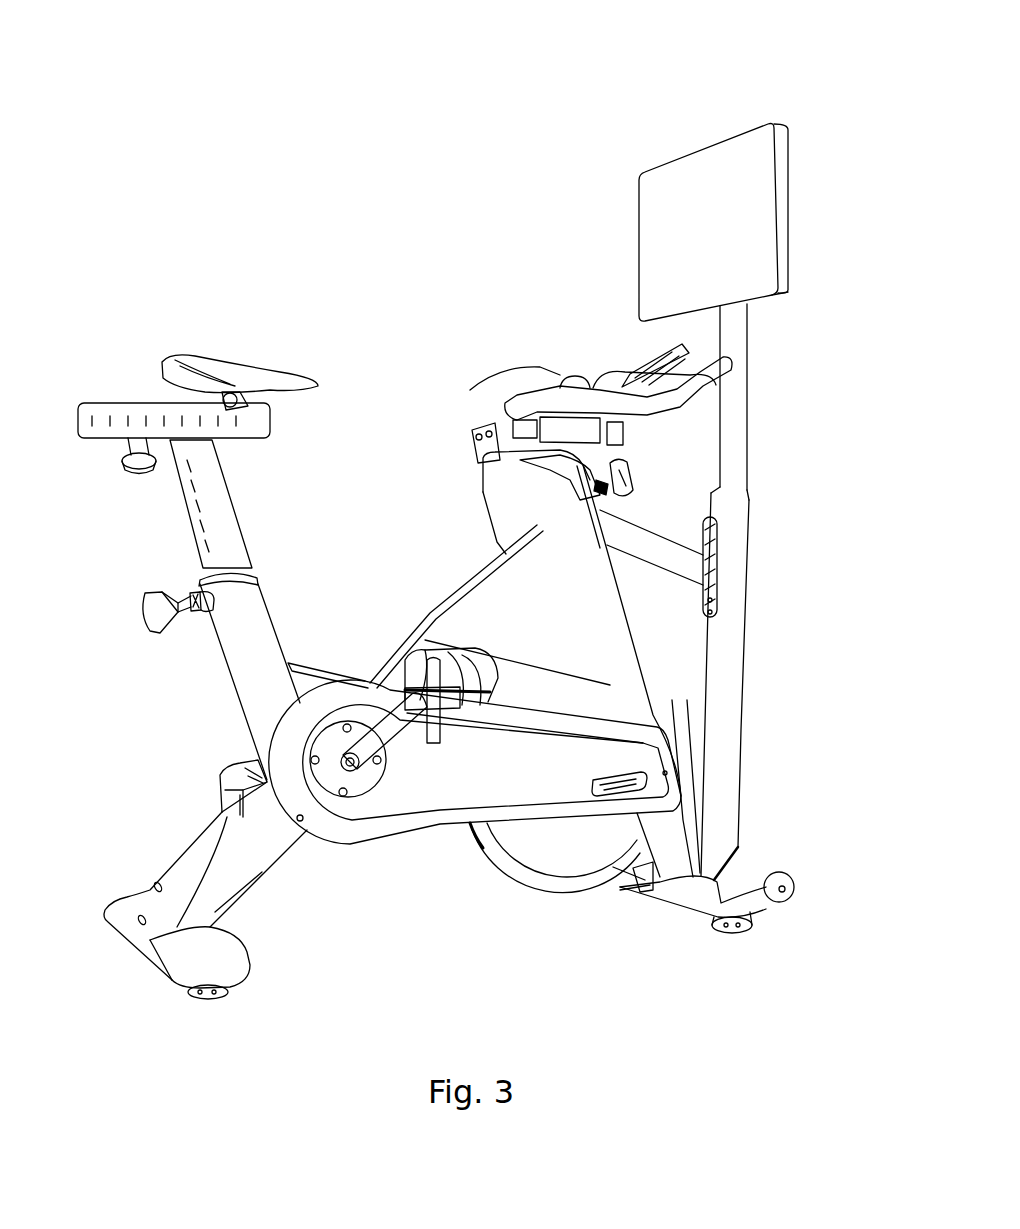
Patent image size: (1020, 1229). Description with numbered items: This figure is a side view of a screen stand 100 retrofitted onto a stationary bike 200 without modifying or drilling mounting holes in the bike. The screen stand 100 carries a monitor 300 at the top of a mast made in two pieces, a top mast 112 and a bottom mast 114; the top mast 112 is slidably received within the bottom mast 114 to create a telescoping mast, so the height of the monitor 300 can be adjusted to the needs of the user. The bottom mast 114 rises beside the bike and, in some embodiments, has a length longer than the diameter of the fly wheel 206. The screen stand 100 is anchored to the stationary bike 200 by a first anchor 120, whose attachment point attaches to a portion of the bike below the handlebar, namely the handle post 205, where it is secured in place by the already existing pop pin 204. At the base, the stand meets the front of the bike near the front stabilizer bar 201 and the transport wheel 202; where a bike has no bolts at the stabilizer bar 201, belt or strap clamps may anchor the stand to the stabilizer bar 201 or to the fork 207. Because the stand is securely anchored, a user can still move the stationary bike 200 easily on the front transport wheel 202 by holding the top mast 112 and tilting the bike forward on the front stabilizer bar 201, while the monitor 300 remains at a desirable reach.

The screen stand 100 is at (688, 128).
The top mast 112 is at (727, 470).
The bottom mast 114 is at (720, 645).
The first anchor 120 is at (625, 533).
The stationary bike 200 is at (262, 242).
The front stabilizer bar 201 is at (685, 908).
The transport wheel 202 is at (776, 873).
The pop pin 204 is at (625, 470).
The handle post 205 is at (540, 472).
The fly wheel 206 is at (539, 845).
The fork 207 is at (627, 703).
The monitor 300 is at (663, 220).